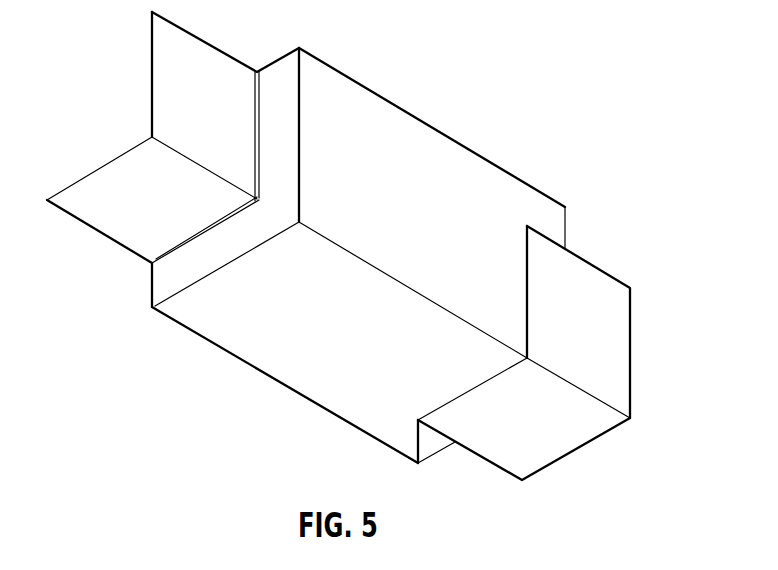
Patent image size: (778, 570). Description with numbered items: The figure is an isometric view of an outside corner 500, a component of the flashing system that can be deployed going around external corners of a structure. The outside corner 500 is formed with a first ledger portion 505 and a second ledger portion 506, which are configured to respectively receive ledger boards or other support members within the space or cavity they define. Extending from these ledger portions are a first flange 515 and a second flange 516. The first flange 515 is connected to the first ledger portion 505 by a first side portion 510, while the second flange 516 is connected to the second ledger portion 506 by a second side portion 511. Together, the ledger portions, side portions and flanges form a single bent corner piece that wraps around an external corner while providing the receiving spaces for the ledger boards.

The outside corner 500 is at (372, 261).
The first ledger portion 505 is at (284, 362).
The second ledger portion 506 is at (447, 158).
The first side portion 510 is at (433, 446).
The second side portion 511 is at (554, 236).
The first flange 515 is at (542, 445).
The second flange 516 is at (608, 352).